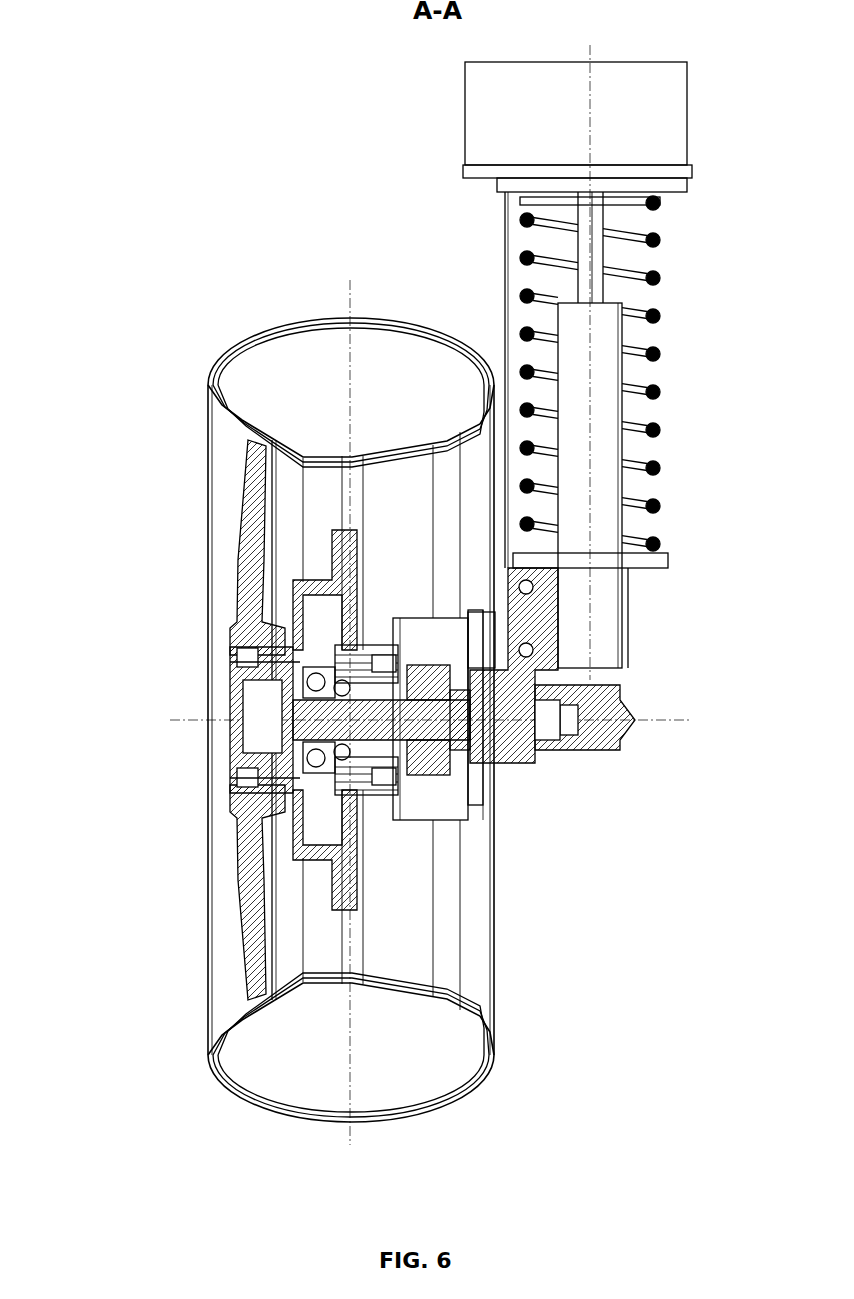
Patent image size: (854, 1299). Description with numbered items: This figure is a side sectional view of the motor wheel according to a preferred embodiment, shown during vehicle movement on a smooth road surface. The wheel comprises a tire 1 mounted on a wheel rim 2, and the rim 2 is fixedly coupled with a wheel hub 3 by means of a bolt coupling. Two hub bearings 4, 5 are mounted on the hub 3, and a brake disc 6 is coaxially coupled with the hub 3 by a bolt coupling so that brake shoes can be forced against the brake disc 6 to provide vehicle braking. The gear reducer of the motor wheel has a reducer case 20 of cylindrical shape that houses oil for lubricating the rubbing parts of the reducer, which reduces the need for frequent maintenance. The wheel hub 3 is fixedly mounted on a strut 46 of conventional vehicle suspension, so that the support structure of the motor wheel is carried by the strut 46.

The tire 1 is at (293, 586).
The wheel rim 2 is at (188, 658).
The wheel hub 3 is at (611, 652).
The hub bearing 4 is at (626, 779).
The hub bearing 5 is at (280, 753).
The brake disc 6 is at (221, 763).
The reducer case 20 is at (584, 827).
The strut 46 is at (621, 365).